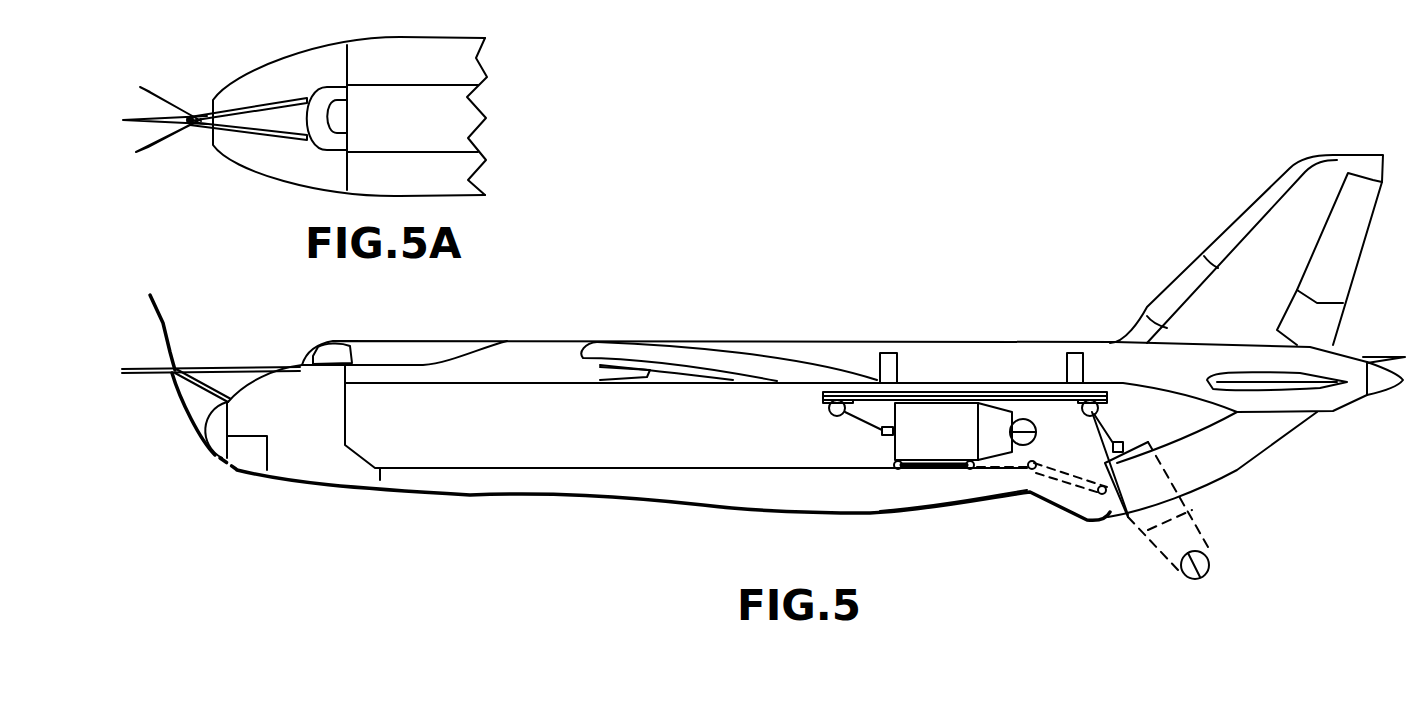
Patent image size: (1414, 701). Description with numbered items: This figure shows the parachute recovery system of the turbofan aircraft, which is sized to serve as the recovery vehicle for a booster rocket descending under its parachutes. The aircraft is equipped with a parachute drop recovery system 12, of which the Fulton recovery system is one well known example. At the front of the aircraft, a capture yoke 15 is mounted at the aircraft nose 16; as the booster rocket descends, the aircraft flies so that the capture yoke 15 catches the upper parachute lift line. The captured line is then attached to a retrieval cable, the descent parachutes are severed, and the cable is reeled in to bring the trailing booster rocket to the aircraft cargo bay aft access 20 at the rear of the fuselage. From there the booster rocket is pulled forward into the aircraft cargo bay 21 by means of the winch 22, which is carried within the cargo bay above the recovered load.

In FIG. 5, the parachute drop recovery system 12 is at (455, 510).
In FIG. 5A, the capture yoke 15 is at (150, 120).
In FIG. 5, the capture yoke 15 is at (168, 367).
In FIG. 5, the aircraft nose 16 is at (198, 433).
In FIG. 5, the aircraft cargo bay aft access 20 is at (1237, 470).
In FIG. 5, the aircraft cargo bay 21 is at (668, 430).
In FIG. 5, the winch 22 is at (838, 398).